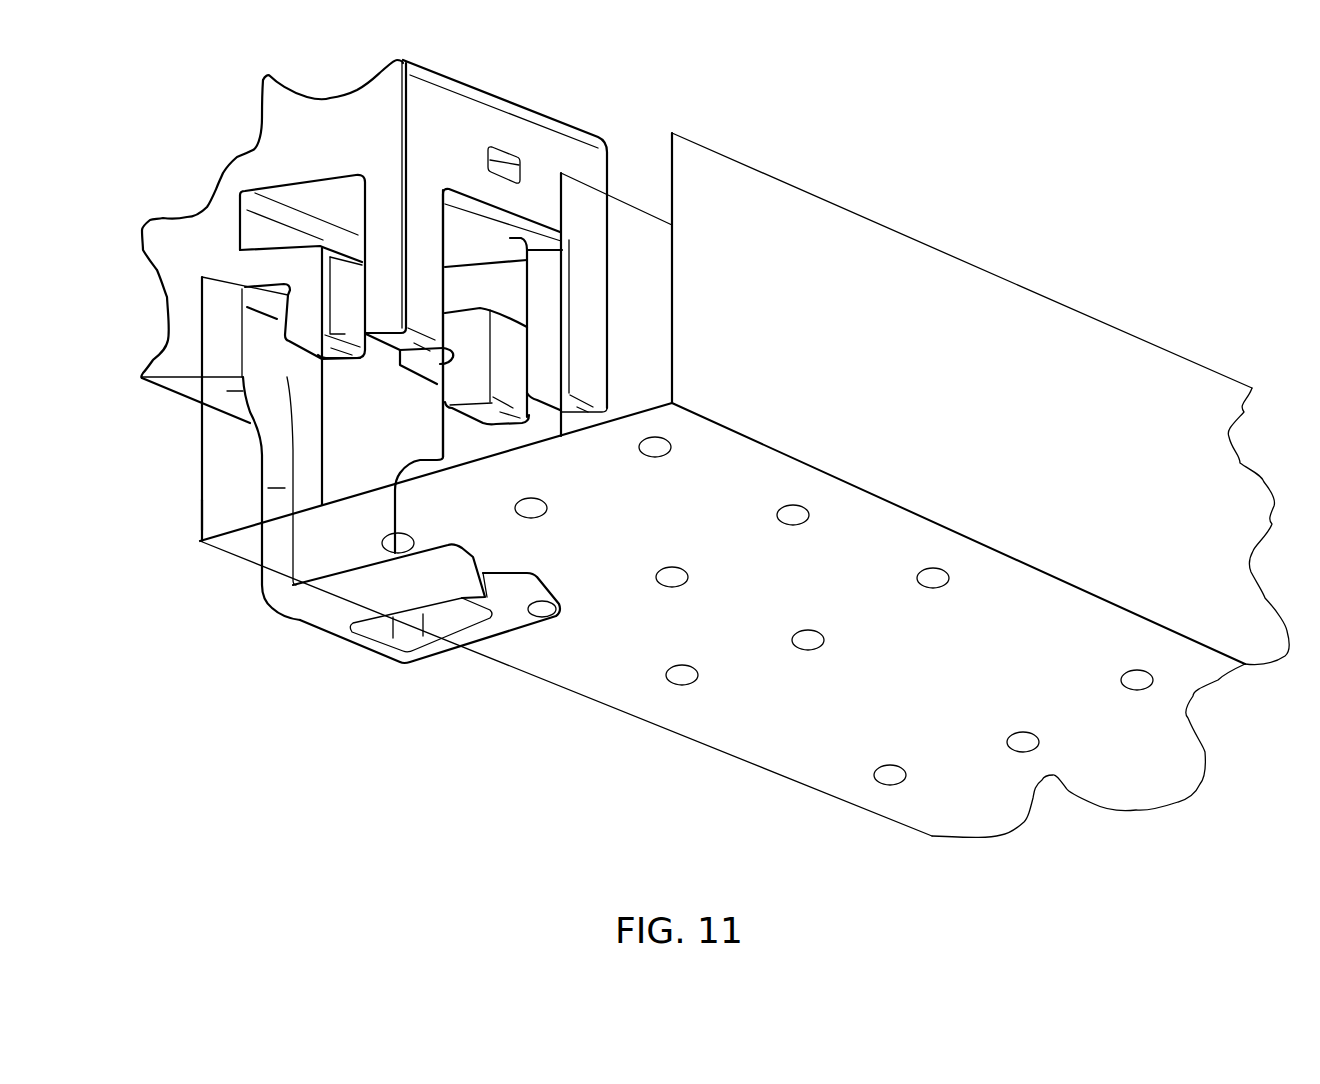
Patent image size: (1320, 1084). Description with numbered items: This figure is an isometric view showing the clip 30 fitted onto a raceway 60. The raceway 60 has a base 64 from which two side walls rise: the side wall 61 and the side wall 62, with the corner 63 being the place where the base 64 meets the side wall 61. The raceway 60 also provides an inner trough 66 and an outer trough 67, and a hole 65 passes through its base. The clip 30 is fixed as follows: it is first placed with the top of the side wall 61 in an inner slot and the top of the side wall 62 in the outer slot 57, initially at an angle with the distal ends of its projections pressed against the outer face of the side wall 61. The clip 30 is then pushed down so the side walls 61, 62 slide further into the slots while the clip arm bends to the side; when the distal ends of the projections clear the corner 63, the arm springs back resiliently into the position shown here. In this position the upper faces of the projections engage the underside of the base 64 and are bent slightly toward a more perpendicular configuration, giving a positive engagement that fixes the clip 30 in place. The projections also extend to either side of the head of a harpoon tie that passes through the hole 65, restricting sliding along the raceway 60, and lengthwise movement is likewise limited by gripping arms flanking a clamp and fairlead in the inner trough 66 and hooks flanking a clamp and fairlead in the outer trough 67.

The clip 30 is at (200, 167).
The outer slot 57 is at (371, 566).
The raceway 60 is at (585, 672).
The side wall 61 is at (202, 448).
The side wall 62 is at (318, 398).
The corner 63 is at (202, 541).
The base 64 is at (310, 545).
The hole 65 is at (410, 532).
The inner trough 66 is at (394, 431).
The outer trough 67 is at (247, 490).